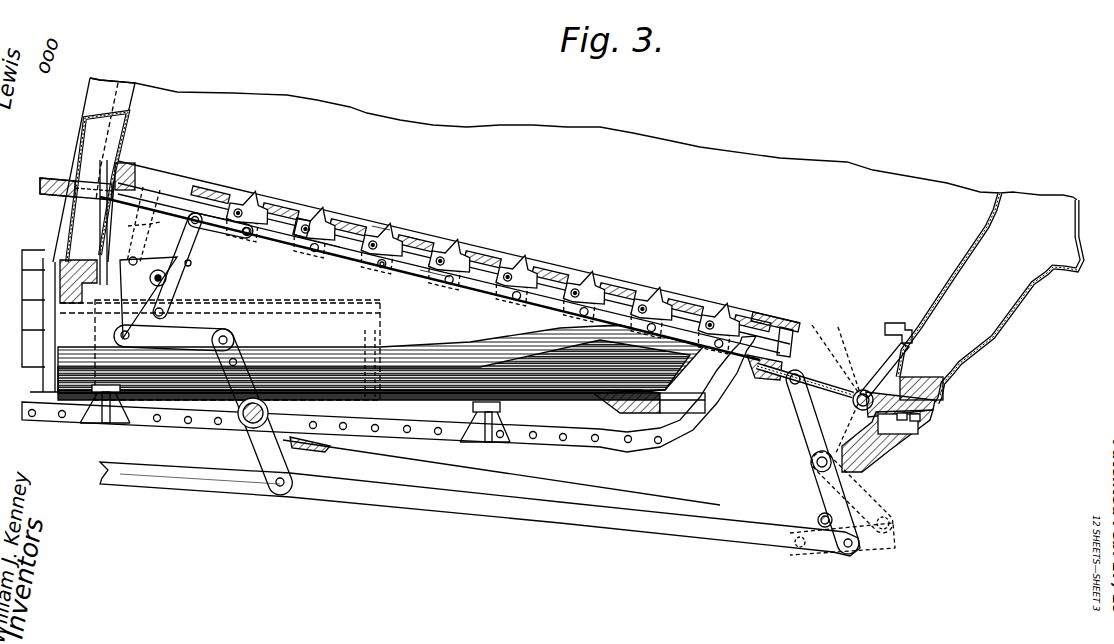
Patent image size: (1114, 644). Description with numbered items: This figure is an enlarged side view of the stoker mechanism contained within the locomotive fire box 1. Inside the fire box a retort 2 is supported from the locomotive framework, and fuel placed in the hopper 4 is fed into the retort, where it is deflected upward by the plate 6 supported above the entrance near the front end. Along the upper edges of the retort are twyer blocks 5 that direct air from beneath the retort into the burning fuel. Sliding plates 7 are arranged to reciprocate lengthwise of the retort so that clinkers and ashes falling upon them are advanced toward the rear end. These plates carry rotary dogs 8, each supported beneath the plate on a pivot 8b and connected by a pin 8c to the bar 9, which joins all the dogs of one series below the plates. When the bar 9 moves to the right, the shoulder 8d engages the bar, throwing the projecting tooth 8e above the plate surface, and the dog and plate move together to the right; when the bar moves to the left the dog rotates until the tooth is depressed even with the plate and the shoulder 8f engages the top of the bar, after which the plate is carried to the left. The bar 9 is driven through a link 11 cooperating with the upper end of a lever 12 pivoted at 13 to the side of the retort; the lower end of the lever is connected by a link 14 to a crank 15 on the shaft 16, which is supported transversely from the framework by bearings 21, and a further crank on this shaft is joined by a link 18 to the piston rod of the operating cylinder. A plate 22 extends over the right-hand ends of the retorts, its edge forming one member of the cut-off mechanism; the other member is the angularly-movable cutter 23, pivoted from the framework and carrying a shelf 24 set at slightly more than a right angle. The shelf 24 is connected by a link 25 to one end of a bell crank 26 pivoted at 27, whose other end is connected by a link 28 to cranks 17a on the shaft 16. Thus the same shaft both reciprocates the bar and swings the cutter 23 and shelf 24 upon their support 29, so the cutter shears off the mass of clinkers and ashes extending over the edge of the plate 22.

The locomotive fire box 1 is at (810, 163).
The retort 2 is at (381, 356).
The hopper 4 is at (32, 255).
The twyer blocks 5 is at (627, 283).
The plate 6 is at (136, 225).
The sliding plates 7 is at (682, 300).
The rotary dogs 8 is at (253, 192).
The pivot 8b is at (330, 253).
The pin 8c is at (381, 267).
The shoulder 8d is at (427, 277).
The projecting tooth 8e is at (381, 226).
The shoulder 8f is at (414, 238).
The bar 9 is at (416, 270).
The link 11 is at (218, 236).
The lever 12 is at (184, 222).
The pivot 13 is at (180, 288).
The link 14 is at (192, 335).
The crank 15 is at (248, 370).
The shaft 16 is at (236, 418).
The cranks 17a is at (300, 463).
The link 18 is at (173, 483).
The bearings 21 is at (193, 424).
The plate 22 is at (773, 328).
The cutter 23 is at (905, 323).
The shelf 24 is at (827, 373).
The link 25 is at (806, 423).
The bell crank 26 is at (838, 488).
The pivot 27 is at (821, 518).
The link 28 is at (712, 531).
The support 29 is at (900, 383).